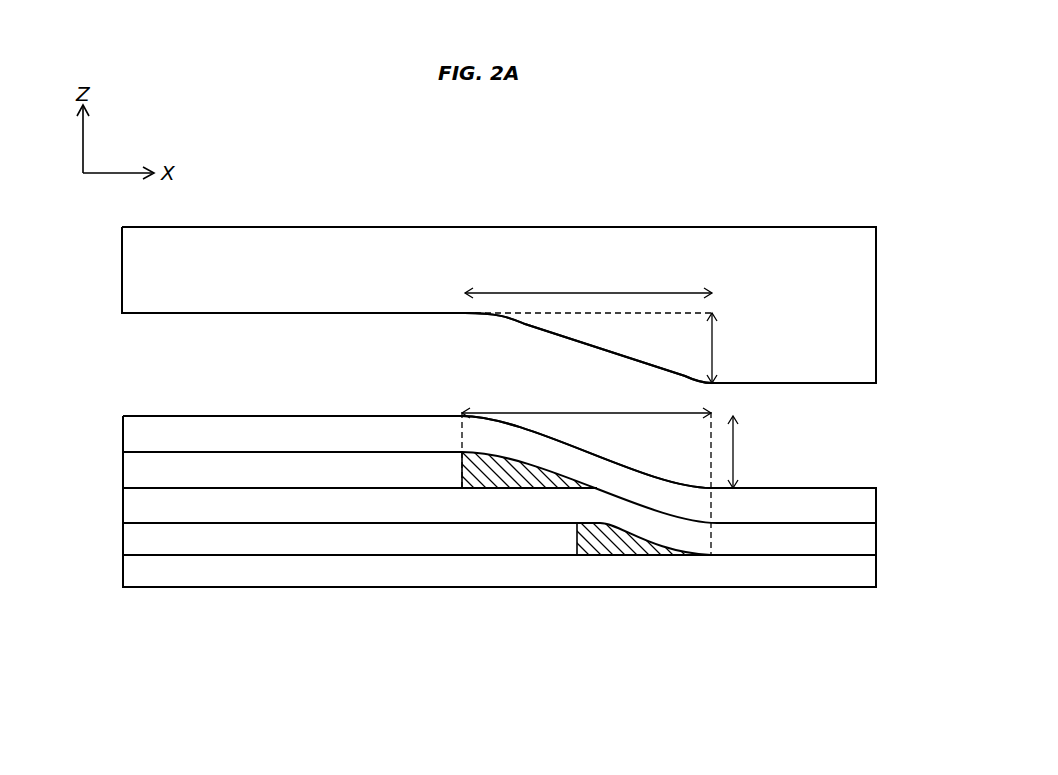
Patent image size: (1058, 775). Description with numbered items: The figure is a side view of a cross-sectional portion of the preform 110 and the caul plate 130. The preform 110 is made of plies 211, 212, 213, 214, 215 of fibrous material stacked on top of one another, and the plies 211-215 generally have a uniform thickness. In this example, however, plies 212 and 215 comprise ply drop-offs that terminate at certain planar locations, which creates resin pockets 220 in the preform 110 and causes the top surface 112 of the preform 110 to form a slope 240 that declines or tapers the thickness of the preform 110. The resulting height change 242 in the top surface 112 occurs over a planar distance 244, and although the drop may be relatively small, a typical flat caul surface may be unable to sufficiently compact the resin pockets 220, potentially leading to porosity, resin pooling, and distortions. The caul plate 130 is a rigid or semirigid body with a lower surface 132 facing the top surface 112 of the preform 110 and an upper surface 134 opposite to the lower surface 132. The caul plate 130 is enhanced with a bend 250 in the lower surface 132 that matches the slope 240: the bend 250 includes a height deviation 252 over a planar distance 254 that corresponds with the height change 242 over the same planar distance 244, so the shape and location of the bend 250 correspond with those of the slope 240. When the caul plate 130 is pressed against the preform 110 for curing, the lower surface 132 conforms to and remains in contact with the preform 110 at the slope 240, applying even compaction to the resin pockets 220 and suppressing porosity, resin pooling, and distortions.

The preform 110 is at (467, 532).
The top surface 112 is at (200, 403).
The caul plate 130 is at (322, 143).
The lower surface 132 is at (852, 393).
The upper surface 134 is at (850, 218).
The ply 211 is at (123, 433).
The ply 212 is at (123, 468).
The ply 213 is at (123, 503).
The ply 214 is at (123, 538).
The ply 215 is at (123, 572).
The resin pockets 220 is at (603, 535).
The slope 240 is at (626, 447).
The height change 242 is at (736, 452).
The planar distance 244 is at (626, 413).
The bend 250 is at (560, 345).
The height deviation 252 is at (714, 348).
The planar distance 254 is at (565, 292).